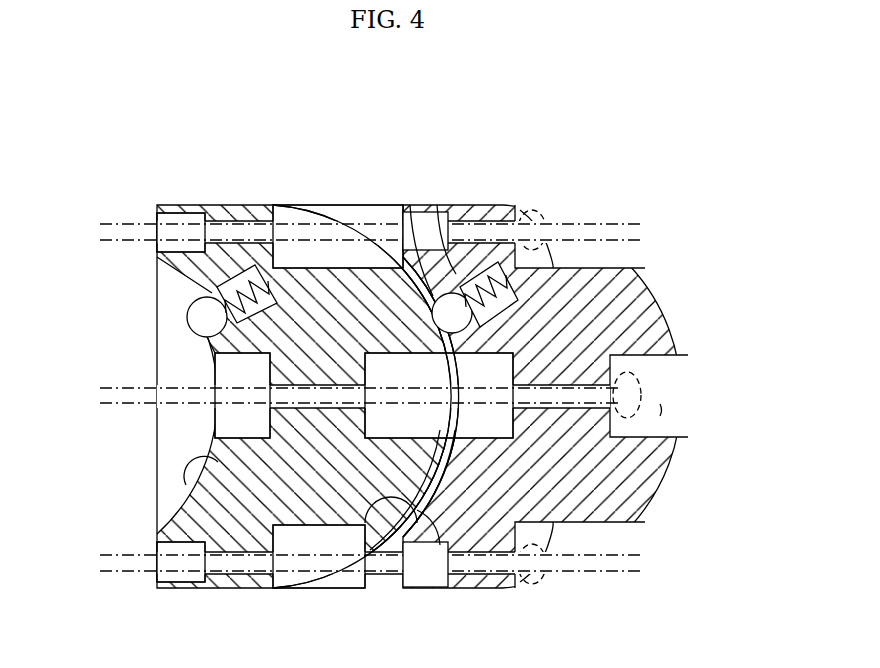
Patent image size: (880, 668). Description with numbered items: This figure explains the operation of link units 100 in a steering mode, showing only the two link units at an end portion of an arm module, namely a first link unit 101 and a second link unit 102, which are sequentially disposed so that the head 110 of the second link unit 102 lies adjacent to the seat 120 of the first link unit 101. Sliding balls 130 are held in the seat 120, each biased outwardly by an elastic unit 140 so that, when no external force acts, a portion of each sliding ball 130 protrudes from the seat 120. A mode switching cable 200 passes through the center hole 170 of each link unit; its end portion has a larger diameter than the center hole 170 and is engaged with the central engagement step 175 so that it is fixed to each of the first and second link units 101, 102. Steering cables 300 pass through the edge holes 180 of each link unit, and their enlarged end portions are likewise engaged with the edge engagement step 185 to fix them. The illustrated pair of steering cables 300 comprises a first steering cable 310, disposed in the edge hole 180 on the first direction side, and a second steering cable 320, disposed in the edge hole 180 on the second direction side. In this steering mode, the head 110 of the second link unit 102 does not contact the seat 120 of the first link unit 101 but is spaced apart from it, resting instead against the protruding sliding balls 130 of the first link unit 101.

The link unit 100 is at (399, 429).
The first link unit 101 is at (674, 487).
The second link unit 102 is at (226, 590).
The head 110 is at (362, 528).
The seat 120 is at (421, 588).
The sliding ball 130 is at (410, 205).
The elastic unit 140 is at (505, 290).
The center hole 170 is at (662, 410).
The central engagement step 175 is at (613, 362).
The edge hole 180 is at (442, 300).
The edge engagement step 185 is at (528, 212).
The mode switching cable 200 is at (115, 389).
The steering cable 300 is at (335, 395).
The first steering cable 310 is at (115, 223).
The second steering cable 320 is at (115, 556).